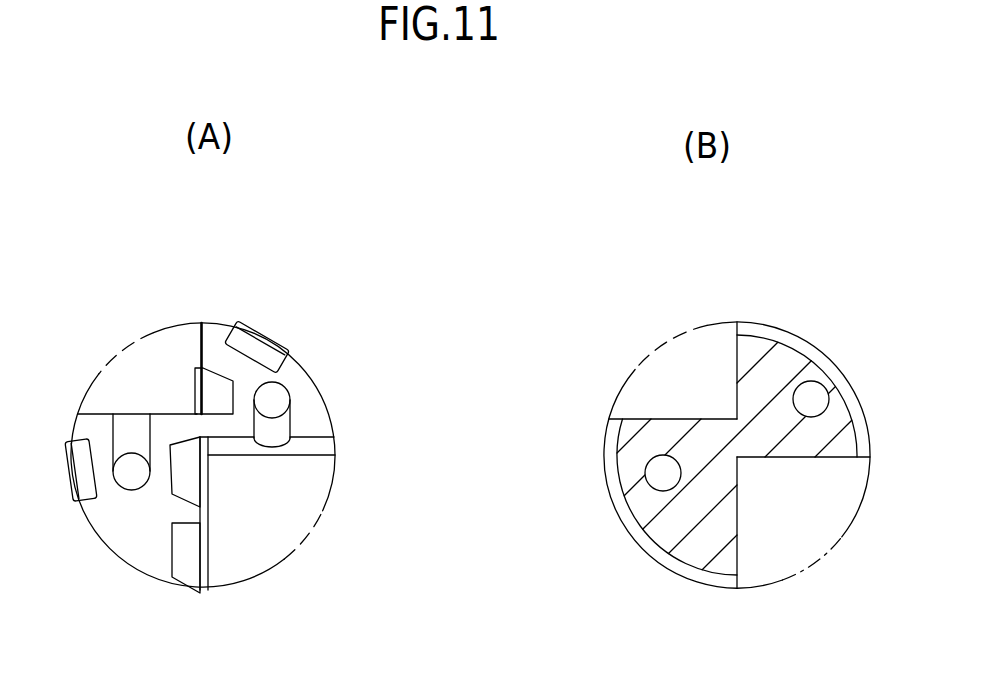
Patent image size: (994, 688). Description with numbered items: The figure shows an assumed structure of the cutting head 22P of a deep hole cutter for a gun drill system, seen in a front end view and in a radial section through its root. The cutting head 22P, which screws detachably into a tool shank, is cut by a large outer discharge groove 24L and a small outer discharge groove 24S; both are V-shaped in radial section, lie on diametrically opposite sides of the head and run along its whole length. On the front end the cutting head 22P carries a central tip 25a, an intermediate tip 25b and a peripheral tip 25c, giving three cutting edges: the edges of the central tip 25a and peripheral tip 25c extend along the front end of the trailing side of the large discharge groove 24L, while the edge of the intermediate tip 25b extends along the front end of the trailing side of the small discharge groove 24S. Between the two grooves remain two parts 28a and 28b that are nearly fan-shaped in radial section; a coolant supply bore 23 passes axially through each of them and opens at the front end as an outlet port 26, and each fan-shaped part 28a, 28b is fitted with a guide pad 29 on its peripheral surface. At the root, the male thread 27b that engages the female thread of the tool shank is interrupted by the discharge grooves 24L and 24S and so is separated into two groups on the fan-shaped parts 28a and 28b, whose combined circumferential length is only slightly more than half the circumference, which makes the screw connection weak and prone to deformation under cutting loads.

The cutting head 22P is at (191, 300).
The coolant supply bore 23 is at (808, 403).
The small outer discharge groove 24S is at (130, 388).
The large outer discharge groove 24L is at (272, 483).
The central tip 25a is at (207, 493).
The intermediate tip 25b is at (193, 398).
The peripheral tip 25c is at (210, 560).
The outlet port 26 is at (275, 398).
The male thread 27b is at (612, 468).
The fan-shaped part 28a is at (667, 523).
The fan-shaped part 28b is at (775, 368).
The guide pad 29 is at (263, 330).